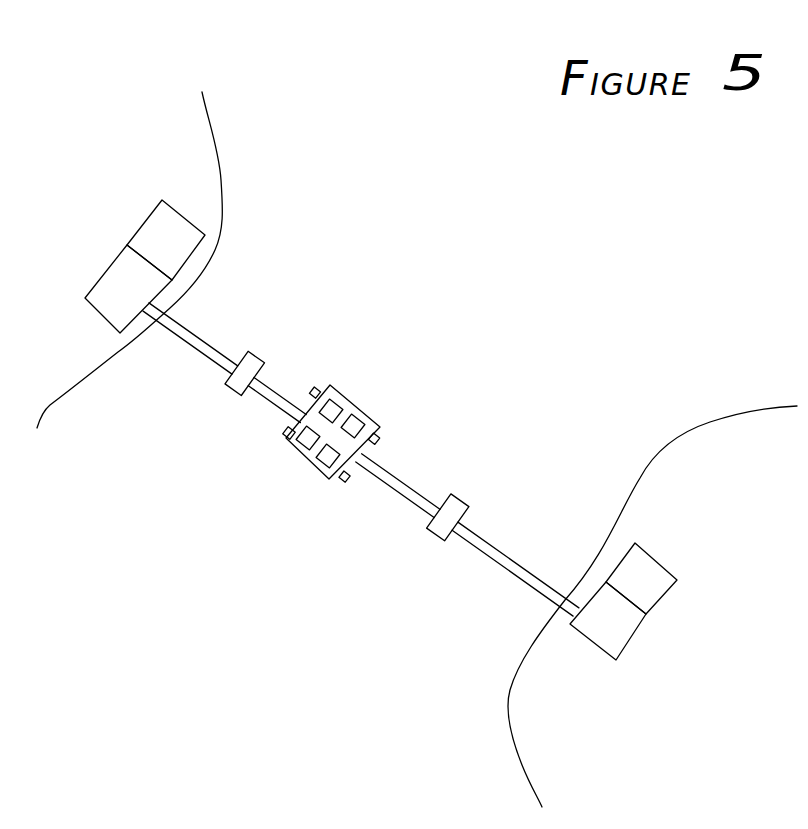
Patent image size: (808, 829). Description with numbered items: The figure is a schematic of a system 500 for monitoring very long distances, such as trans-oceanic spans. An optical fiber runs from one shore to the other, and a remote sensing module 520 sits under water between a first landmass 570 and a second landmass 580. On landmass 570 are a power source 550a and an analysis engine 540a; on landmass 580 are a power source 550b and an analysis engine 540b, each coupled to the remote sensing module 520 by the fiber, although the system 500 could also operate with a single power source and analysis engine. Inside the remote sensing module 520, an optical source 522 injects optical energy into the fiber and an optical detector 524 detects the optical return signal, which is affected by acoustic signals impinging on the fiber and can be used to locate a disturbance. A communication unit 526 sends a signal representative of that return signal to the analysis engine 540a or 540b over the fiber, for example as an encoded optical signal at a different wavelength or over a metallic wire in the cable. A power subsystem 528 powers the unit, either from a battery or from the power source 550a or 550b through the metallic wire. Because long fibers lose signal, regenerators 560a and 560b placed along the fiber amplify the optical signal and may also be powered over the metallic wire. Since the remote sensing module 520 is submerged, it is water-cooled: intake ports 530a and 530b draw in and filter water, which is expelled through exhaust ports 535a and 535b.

The system 500 is at (385, 122).
The remote sensing module 520 is at (356, 407).
The optical source 522 is at (339, 398).
The optical detector 524 is at (359, 420).
The communication unit 526 is at (302, 467).
The power subsystem 528 is at (304, 451).
The intake port 530a is at (377, 434).
The intake port 530b is at (346, 482).
The exhaust port 535a is at (317, 387).
The exhaust port 535b is at (282, 437).
The analysis engine 540a is at (155, 225).
The analysis engine 540b is at (633, 560).
The power source 550a is at (108, 280).
The power source 550b is at (600, 597).
The regenerator 560a is at (247, 358).
The regenerator 560b is at (455, 494).
The landmass 570 is at (214, 197).
The landmass 580 is at (728, 423).